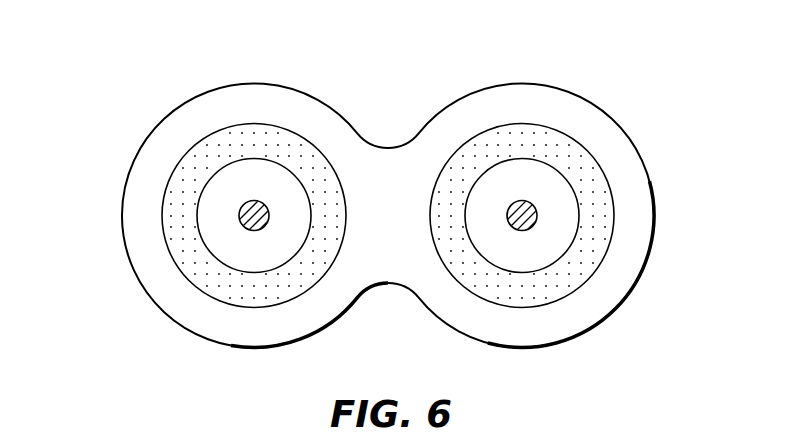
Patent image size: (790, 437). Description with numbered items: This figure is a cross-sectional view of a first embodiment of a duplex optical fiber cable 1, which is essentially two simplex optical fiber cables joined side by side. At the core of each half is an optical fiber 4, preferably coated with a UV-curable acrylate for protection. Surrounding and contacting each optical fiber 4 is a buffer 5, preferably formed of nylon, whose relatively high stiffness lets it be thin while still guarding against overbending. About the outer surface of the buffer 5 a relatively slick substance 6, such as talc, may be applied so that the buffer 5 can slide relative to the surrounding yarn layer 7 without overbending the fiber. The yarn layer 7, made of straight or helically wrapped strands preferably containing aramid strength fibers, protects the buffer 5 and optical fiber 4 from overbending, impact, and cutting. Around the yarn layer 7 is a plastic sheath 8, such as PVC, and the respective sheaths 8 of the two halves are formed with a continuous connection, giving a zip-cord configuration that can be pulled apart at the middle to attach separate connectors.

The duplex optical fiber cable 1 is at (389, 183).
The optical fiber 4 is at (247, 202).
The buffer 5 is at (227, 192).
The substance 6 is at (167, 180).
The yarn layer 7 is at (178, 228).
The sheath 8 is at (162, 282).